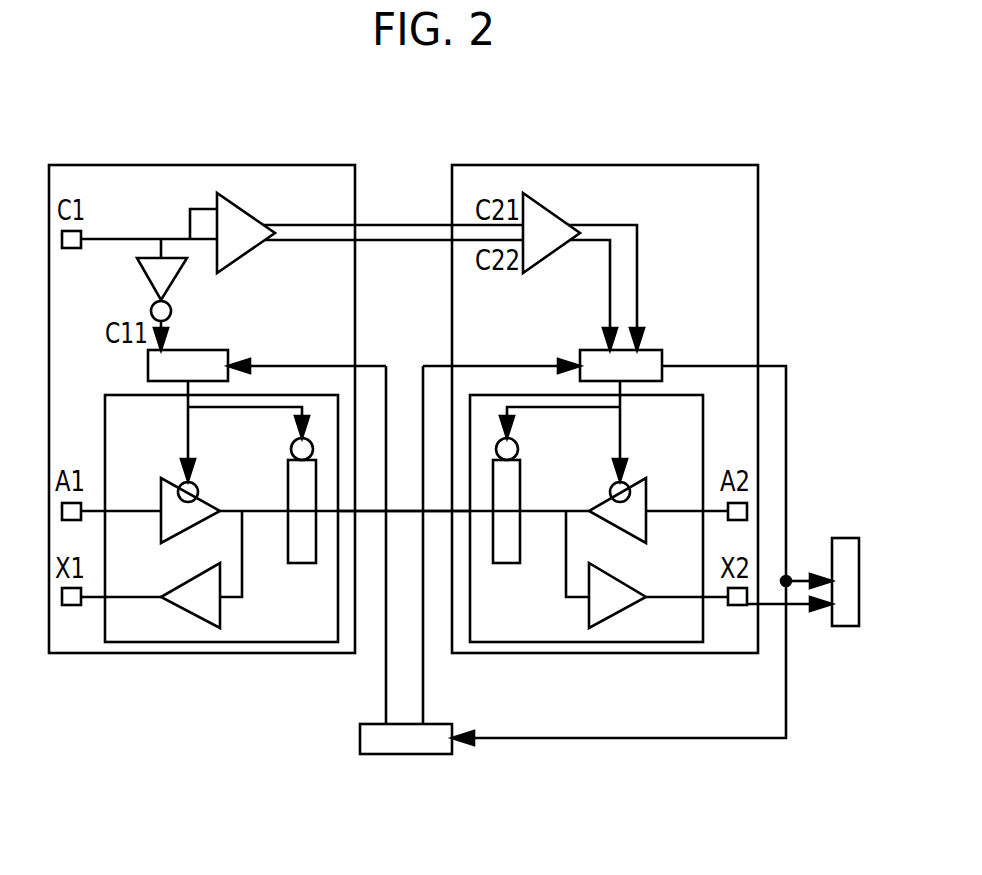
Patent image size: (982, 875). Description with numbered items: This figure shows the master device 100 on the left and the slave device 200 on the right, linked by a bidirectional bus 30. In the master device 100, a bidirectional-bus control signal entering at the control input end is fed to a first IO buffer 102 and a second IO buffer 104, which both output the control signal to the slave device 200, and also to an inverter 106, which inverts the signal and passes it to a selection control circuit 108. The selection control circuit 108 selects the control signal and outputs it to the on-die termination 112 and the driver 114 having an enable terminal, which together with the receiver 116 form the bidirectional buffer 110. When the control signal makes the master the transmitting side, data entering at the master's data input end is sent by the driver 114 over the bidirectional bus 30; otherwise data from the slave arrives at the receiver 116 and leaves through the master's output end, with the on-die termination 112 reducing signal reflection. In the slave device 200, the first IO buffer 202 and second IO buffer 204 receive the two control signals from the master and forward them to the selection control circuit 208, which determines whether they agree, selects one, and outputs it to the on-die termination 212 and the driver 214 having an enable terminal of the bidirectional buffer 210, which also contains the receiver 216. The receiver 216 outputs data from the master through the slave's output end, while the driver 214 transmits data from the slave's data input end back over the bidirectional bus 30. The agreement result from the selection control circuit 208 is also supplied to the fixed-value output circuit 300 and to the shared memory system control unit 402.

The bidirectional bus 30 is at (407, 510).
The master device 100 is at (245, 653).
The first IO buffer 102 is at (257, 212).
The second IO buffer 104 is at (253, 258).
The inverter 106 is at (173, 283).
The selection control circuit 108 is at (218, 347).
The bidirectional buffer 110 is at (118, 395).
The on-die termination 112 is at (307, 563).
The driver having an enable terminal 114 is at (200, 497).
The receiver 116 is at (180, 587).
The slave device 200 is at (513, 653).
The first IO buffer 202 is at (563, 210).
The second IO buffer 204 is at (555, 257).
The selection control circuit 208 is at (652, 345).
The bidirectional buffer 210 is at (675, 395).
The on-die termination 212 is at (512, 563).
The driver having an enable terminal 214 is at (607, 498).
The receiver 216 is at (618, 572).
The fixed-value output circuit 300 is at (848, 626).
The shared memory system control unit 402 is at (360, 737).